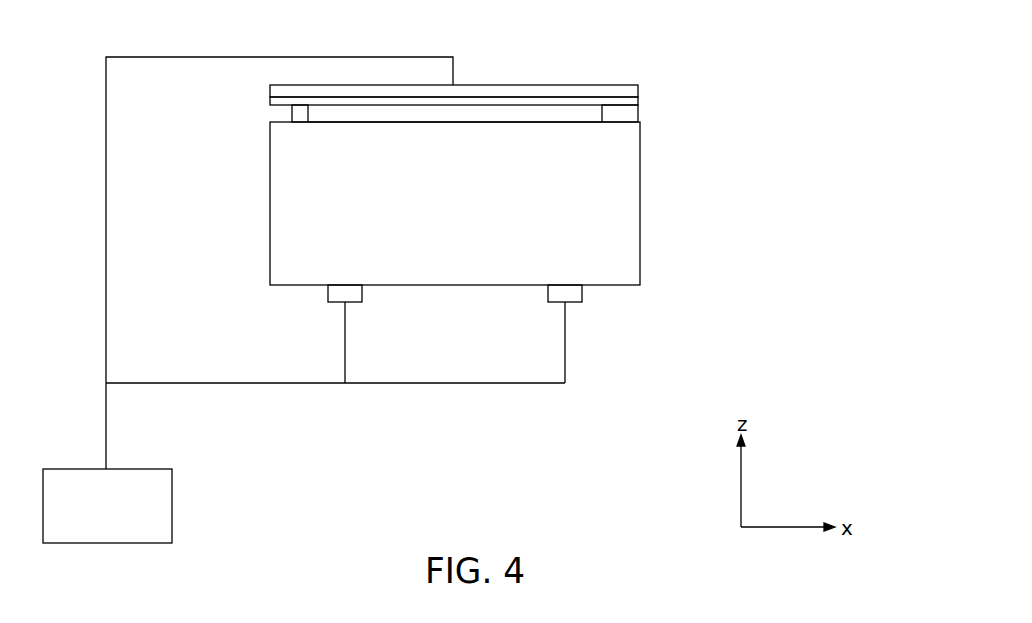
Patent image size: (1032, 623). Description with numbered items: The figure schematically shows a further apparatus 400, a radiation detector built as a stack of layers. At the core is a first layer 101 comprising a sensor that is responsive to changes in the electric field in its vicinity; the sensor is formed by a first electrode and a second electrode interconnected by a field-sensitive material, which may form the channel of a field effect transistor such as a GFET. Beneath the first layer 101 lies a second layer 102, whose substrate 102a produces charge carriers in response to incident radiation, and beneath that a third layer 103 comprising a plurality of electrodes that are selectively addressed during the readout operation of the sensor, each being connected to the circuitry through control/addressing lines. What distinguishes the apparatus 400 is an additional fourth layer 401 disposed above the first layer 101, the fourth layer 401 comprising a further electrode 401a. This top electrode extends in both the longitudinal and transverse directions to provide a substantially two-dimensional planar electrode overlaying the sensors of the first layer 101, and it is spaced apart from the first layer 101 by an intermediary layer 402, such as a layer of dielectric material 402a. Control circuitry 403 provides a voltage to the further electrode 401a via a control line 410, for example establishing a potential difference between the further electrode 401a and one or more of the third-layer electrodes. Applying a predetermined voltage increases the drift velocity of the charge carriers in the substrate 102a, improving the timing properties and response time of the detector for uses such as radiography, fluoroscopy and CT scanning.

The apparatus 400 is at (815, 50).
The control line 410 is at (453, 70).
The control circuitry 403 is at (158, 497).
The fourth layer 401 is at (245, 120).
The further electrode 401a is at (638, 92).
The intermediary layer 402 is at (240, 102).
The dielectric material 402a is at (640, 100).
The first layer 101 is at (238, 116).
The second layer 102 is at (242, 288).
The substrate 102a is at (613, 250).
The third layer 103 is at (242, 300).